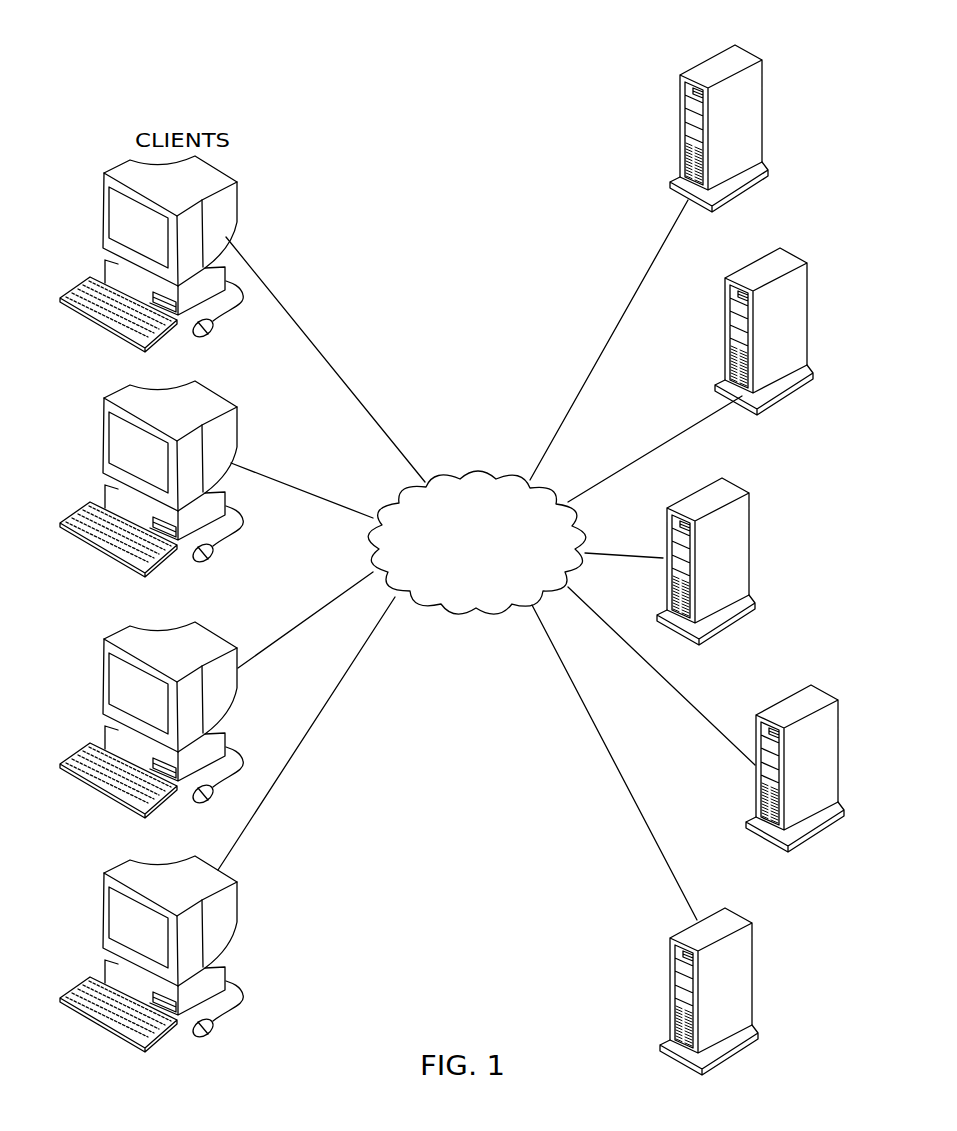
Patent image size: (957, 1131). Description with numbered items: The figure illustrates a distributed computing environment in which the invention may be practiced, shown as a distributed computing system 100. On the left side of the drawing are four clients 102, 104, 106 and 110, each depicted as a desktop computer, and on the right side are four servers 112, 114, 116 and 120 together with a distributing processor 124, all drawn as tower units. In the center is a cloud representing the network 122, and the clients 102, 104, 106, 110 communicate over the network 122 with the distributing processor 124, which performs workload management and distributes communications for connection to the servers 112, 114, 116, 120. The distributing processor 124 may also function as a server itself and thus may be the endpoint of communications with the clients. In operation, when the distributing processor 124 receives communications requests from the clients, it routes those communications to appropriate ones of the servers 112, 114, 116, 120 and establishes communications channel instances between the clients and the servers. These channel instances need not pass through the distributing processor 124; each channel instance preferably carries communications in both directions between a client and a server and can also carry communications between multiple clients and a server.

The distributed computing system 100 is at (332, 72).
The client 102 is at (103, 191).
The client 104 is at (139, 479).
The client 106 is at (139, 720).
The client 110 is at (139, 954).
The server 112 is at (762, 96).
The server 114 is at (807, 315).
The server 116 is at (838, 743).
The server 120 is at (752, 957).
The network 122 is at (493, 553).
The distributing processor 124 is at (748, 539).